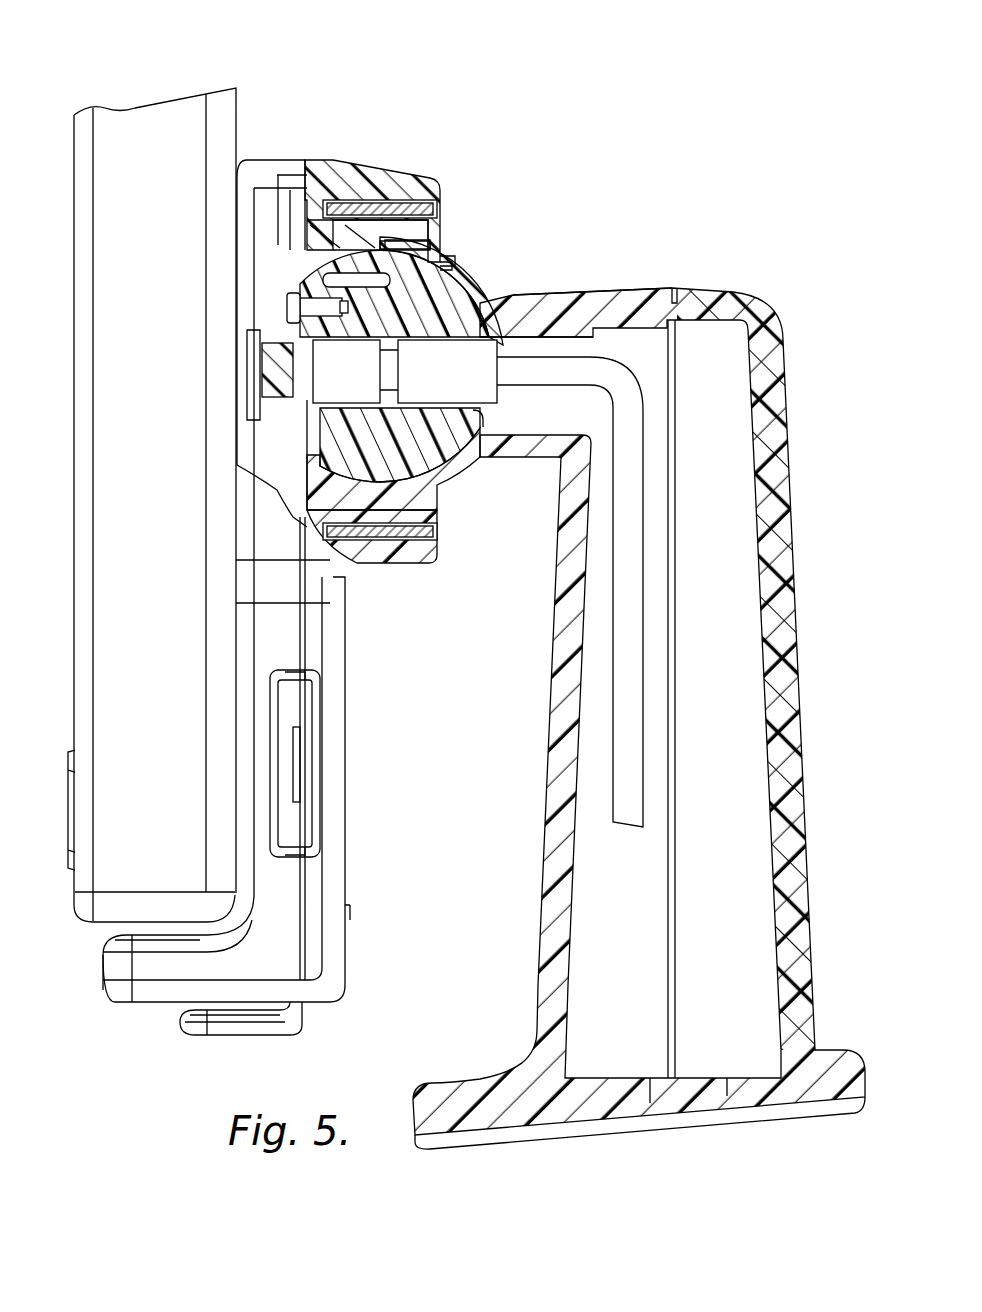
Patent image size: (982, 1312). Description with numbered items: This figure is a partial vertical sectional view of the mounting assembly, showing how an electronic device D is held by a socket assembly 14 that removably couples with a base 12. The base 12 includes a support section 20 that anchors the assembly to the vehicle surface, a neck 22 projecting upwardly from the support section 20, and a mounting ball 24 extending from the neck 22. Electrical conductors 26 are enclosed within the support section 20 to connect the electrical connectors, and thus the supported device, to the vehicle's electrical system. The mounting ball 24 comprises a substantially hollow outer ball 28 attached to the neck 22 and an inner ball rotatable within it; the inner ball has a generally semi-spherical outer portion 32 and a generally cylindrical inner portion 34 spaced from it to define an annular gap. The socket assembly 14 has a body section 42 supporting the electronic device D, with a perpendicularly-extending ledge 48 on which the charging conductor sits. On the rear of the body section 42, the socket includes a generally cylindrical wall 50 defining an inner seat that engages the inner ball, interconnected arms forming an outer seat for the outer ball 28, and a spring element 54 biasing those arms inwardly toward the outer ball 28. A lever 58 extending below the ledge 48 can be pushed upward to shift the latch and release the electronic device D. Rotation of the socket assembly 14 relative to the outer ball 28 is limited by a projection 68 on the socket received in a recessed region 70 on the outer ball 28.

The electronic device D is at (104, 108).
The base 12 is at (797, 349).
The socket assembly 14 is at (230, 324).
The support section 20 is at (775, 437).
The neck 22 is at (528, 315).
The mounting ball 24 is at (497, 270).
The electrical conductors 26 is at (630, 578).
The outer ball 28 is at (505, 285).
The outer portion 32 is at (366, 264).
The inner portion 34 is at (340, 300).
The body section 42 is at (290, 634).
The ledge 48 is at (120, 975).
The cylindrical wall 50 is at (325, 283).
The spring element 54 is at (437, 532).
The lever 58 is at (230, 1030).
The projection 68 is at (400, 246).
The recessed region 70 is at (443, 257).